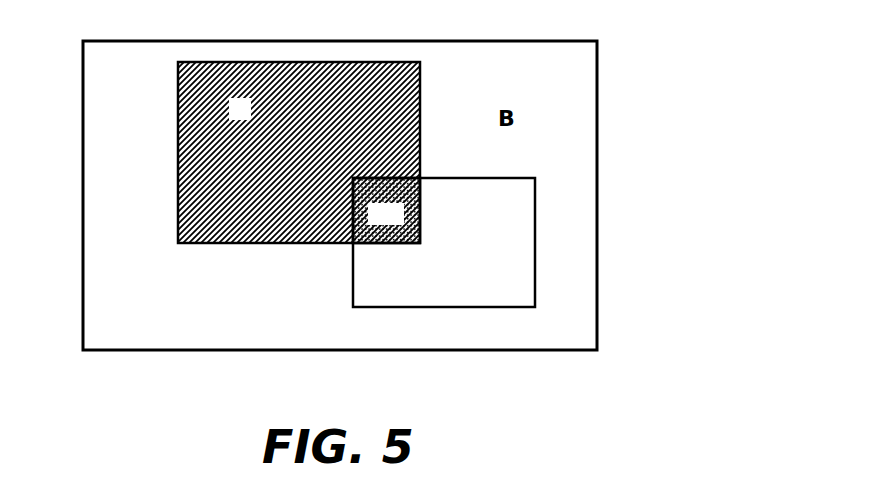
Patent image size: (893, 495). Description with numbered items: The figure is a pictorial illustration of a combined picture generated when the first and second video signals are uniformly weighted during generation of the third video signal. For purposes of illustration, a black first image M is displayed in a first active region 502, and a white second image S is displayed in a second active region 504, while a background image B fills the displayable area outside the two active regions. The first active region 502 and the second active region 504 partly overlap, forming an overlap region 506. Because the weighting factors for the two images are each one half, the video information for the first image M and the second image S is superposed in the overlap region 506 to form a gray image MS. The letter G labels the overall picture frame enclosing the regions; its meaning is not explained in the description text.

The first active region 502 is at (421, 74).
The second active region 504 is at (352, 288).
The overlap region 506 is at (421, 214).
The universal set / group box G is at (598, 108).